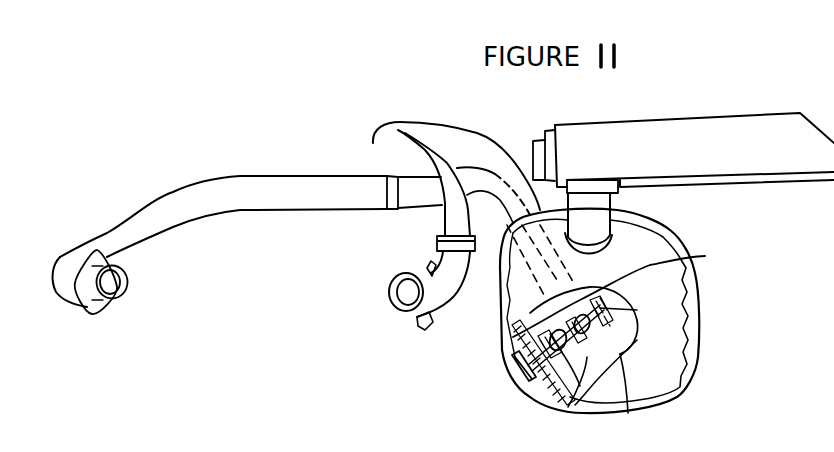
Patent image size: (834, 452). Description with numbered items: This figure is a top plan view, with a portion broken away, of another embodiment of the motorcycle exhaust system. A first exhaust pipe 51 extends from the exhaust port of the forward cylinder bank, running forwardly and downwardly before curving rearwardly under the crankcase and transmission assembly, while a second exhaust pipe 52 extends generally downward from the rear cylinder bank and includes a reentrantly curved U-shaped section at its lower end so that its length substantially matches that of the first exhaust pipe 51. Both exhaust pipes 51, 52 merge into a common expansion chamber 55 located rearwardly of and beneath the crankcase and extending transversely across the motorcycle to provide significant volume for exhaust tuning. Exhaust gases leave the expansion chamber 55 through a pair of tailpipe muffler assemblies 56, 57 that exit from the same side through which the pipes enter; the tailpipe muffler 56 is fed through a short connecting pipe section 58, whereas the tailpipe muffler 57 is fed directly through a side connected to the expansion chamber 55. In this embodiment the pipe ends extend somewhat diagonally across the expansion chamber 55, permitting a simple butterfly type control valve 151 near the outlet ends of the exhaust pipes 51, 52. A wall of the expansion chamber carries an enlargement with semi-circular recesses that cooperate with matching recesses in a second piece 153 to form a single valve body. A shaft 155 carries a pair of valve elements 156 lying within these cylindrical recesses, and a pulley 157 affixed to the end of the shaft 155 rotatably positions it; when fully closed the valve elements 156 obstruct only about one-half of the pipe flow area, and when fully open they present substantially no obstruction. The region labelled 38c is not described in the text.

The first exhaust pipe 51 is at (257, 210).
The second exhaust pipe 52 is at (371, 143).
The expansion chamber 55 is at (697, 287).
The tailpipe muffler 56 is at (753, 113).
The tailpipe muffler 57 is at (793, 180).
The connecting pipe section 58 is at (612, 225).
The second piece 153 is at (690, 257).
The shaft 155 is at (637, 310).
The valve body 38c is at (637, 347).
The valve elements 156 is at (577, 395).
The control valve 151 is at (540, 386).
The pulley 157 is at (513, 368).